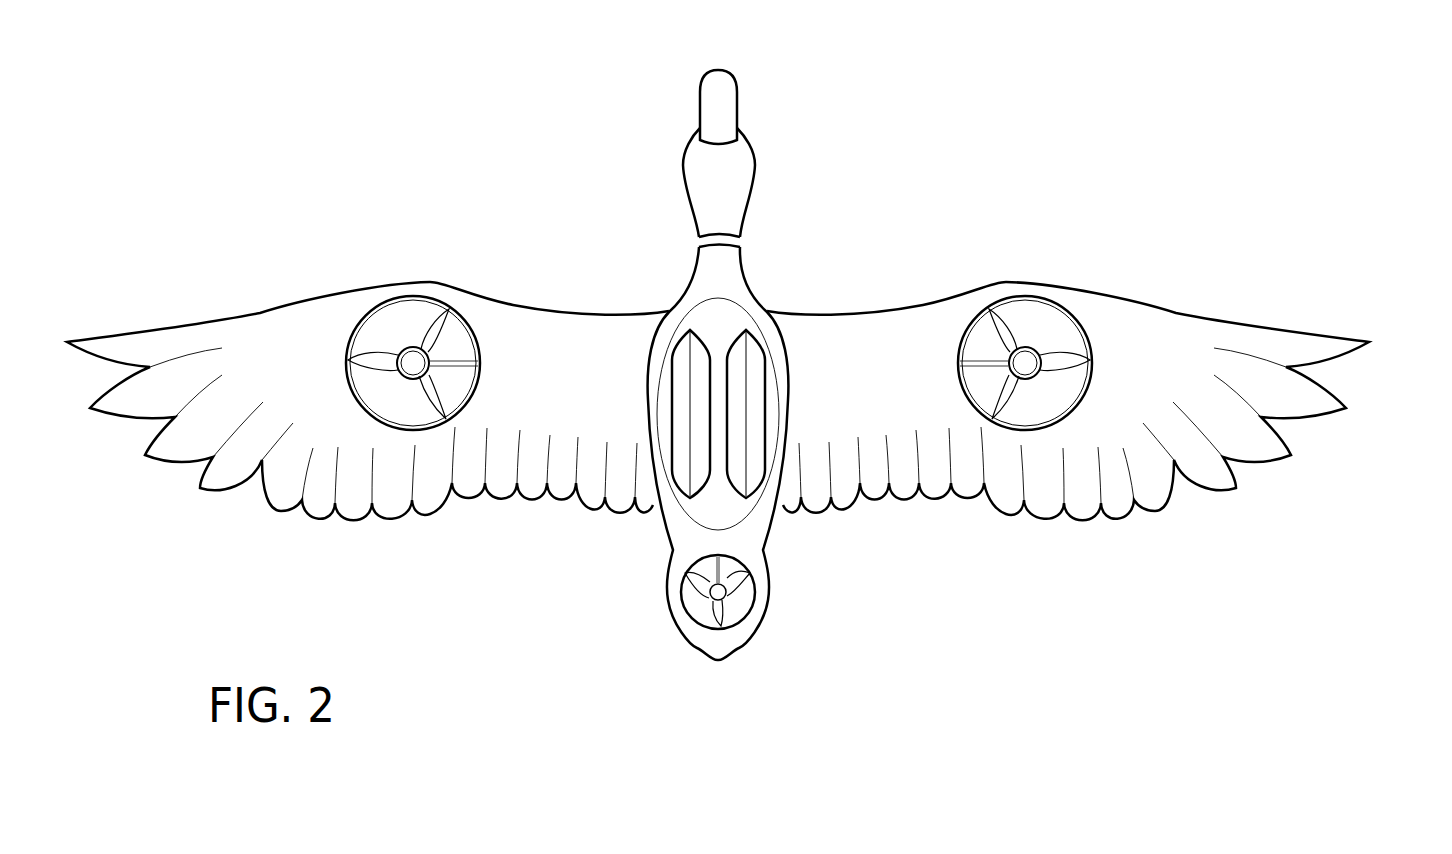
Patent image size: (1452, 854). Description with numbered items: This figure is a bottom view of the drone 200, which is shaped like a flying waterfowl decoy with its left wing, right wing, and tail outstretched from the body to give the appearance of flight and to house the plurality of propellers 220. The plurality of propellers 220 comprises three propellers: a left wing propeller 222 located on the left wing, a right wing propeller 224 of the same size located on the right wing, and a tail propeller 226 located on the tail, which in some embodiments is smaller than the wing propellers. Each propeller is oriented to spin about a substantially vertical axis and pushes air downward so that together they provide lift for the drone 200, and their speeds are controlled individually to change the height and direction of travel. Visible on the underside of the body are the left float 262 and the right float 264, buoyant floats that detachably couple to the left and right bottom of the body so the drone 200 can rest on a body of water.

The drone 200 is at (752, 400).
The plurality of propellers 220 is at (718, 459).
The left wing propeller 222 is at (1025, 357).
The right wing propeller 224 is at (423, 343).
The tail propeller 226 is at (710, 597).
The left float 262 is at (750, 478).
The right float 264 is at (677, 473).